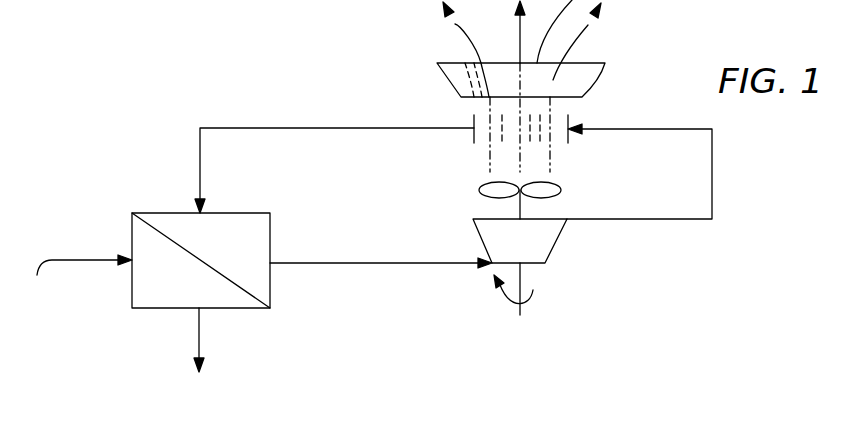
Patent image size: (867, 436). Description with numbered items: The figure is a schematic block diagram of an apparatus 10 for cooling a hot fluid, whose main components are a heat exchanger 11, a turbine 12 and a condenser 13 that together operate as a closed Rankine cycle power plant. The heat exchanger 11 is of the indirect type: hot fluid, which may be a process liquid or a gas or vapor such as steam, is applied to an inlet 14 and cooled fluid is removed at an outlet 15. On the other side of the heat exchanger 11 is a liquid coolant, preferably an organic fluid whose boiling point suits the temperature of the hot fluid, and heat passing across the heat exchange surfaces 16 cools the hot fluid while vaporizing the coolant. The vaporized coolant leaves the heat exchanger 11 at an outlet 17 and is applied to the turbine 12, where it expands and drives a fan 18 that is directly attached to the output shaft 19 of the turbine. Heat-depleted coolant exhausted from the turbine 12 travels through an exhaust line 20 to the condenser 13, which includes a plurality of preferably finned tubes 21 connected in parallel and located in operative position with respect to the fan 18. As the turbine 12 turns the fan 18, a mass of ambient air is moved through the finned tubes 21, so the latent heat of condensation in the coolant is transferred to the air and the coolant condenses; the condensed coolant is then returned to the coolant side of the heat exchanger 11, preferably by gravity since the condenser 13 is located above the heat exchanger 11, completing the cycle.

The apparatus for cooling a hot fluid 10 is at (457, 317).
The heat exchanger 11 is at (147, 308).
The turbine 12 is at (553, 248).
The condenser 13 is at (607, 97).
The inlet 14 is at (77, 267).
The outlet 15 is at (199, 337).
The heat exchange surfaces 16 is at (202, 263).
The outlet 17 is at (437, 264).
The fan 18 is at (558, 185).
The output shaft 19 is at (520, 212).
The exhaust line 20 is at (675, 219).
The finned tubes 21 is at (423, 128).